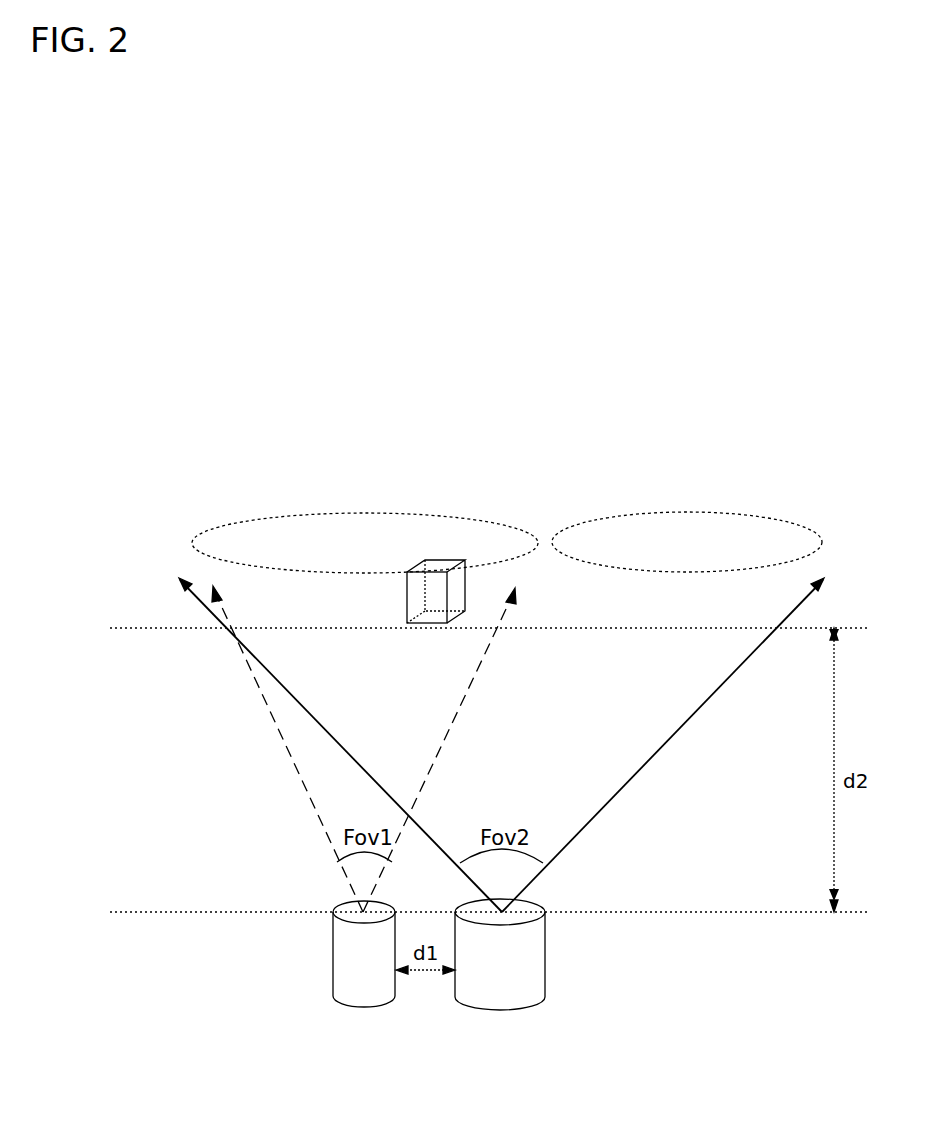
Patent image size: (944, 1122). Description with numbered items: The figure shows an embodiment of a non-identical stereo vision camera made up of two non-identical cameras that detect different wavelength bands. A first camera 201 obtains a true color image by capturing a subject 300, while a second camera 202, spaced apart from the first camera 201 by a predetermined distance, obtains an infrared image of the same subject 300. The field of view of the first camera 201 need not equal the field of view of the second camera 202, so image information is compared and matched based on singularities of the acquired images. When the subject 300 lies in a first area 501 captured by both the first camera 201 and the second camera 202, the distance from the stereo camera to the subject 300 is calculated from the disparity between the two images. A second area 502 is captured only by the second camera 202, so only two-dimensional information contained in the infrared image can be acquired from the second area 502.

The first camera 201 is at (333, 982).
The second camera 202 is at (530, 982).
The subject 300 is at (430, 572).
The first area 501 is at (357, 512).
The second area 502 is at (675, 512).